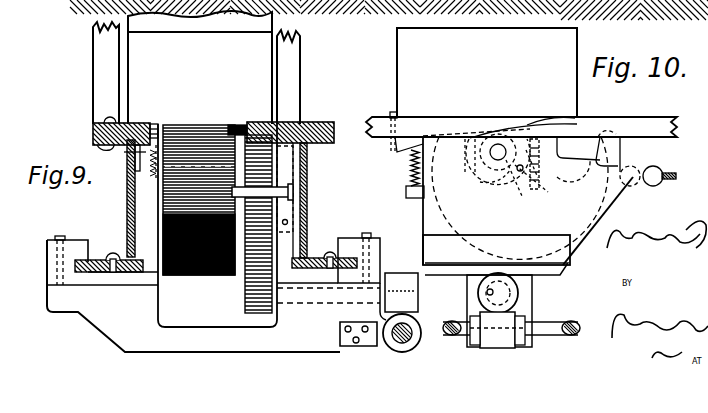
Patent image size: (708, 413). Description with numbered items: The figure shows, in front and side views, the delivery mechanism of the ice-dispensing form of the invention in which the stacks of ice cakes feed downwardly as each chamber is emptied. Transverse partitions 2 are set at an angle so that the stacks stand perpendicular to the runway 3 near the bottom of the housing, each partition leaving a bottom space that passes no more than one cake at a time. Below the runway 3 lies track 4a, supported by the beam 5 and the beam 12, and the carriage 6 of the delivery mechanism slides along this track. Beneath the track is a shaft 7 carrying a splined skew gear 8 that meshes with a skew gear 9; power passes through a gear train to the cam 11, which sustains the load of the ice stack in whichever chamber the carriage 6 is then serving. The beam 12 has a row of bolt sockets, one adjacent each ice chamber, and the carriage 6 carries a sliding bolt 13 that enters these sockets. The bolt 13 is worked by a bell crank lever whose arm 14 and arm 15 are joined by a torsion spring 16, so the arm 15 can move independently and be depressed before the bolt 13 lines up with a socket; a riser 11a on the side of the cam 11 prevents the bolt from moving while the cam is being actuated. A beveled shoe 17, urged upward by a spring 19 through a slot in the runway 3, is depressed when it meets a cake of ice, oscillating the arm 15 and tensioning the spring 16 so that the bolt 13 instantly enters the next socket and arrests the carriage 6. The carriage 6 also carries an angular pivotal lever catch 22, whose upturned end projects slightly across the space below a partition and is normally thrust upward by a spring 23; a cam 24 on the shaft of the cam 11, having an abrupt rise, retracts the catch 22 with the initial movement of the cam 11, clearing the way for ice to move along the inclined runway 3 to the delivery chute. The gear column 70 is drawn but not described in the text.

In FIG. 9, the transverse partition 2 is at (292, 52).
In FIG. 9, the runway 3 is at (132, 124).
In FIG. 10, the runway 3 is at (633, 122).
In FIG. 9, the track 4a is at (95, 273).
In FIG. 9, the beam 5 is at (307, 198).
In FIG. 9, the carriage 6 is at (214, 225).
In FIG. 9, the shaft 7 is at (401, 345).
In FIG. 9, the skew gear 8 is at (417, 343).
In FIG. 10, the skew gear 8 is at (500, 346).
In FIG. 9, the skew gear 9 is at (419, 297).
In FIG. 10, the skew gear 9 is at (519, 294).
In FIG. 9, the cam 11 is at (201, 276).
In FIG. 10, the cam 11 is at (622, 152).
In FIG. 10, the riser 11a is at (520, 191).
In FIG. 9, the beam 12 is at (127, 220).
In FIG. 10, the bolt 13 is at (549, 194).
In FIG. 9, the arm 14 is at (127, 162).
In FIG. 10, the arm 14 is at (499, 182).
In FIG. 9, the arm 15 is at (93, 138).
In FIG. 10, the torsion spring 16 is at (541, 180).
In FIG. 9, the beveled shoe 17 is at (156, 124).
In FIG. 10, the beveled shoe 17 is at (531, 138).
In FIG. 9, the spring 19 is at (163, 168).
In FIG. 10, the spring 19 is at (540, 182).
In FIG. 10, the lever catch 22 is at (398, 152).
In FIG. 9, the spring 23 is at (132, 172).
In FIG. 10, the spring 23 is at (408, 178).
In FIG. 10, the cam 24 is at (478, 171).
In FIG. 9, the gear 70 is at (272, 300).